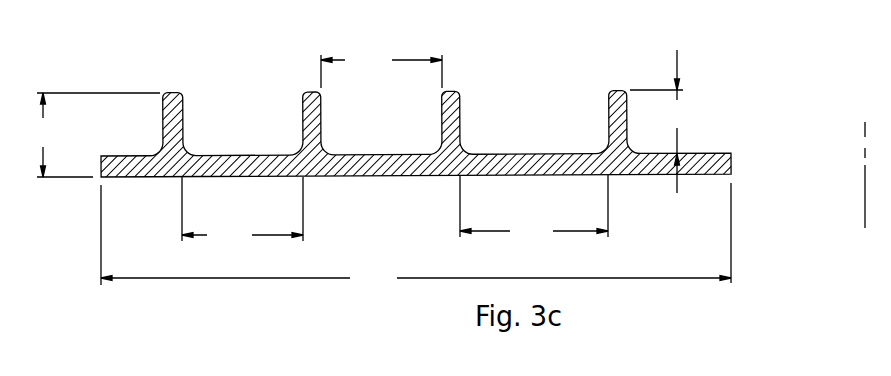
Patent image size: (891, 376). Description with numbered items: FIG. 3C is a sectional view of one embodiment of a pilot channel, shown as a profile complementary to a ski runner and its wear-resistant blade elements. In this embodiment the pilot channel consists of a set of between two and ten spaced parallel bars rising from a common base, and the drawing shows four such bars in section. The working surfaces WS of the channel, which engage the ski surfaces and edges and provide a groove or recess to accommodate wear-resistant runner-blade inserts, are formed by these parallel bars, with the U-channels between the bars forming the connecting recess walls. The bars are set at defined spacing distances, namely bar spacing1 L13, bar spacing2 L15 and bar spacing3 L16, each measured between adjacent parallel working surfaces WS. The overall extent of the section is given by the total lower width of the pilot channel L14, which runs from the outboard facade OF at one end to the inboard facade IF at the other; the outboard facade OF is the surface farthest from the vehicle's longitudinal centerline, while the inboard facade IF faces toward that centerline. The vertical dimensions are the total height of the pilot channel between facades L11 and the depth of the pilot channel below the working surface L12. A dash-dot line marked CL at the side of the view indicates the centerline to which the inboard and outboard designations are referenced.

The working surface WS is at (182, 83).
The total height of pilot channel between facades L11 is at (94, 135).
The depth of pilot channel below WS L12 is at (660, 121).
The bar spacing1 L13 is at (242, 215).
The total lower width of pilot channel L14 is at (416, 279).
The bar spacing2 L15 is at (381, 68).
The bar spacing3 L16 is at (534, 210).
The outboard facade OF is at (103, 257).
The inboard facade IF is at (731, 253).
The center line CL is at (870, 195).